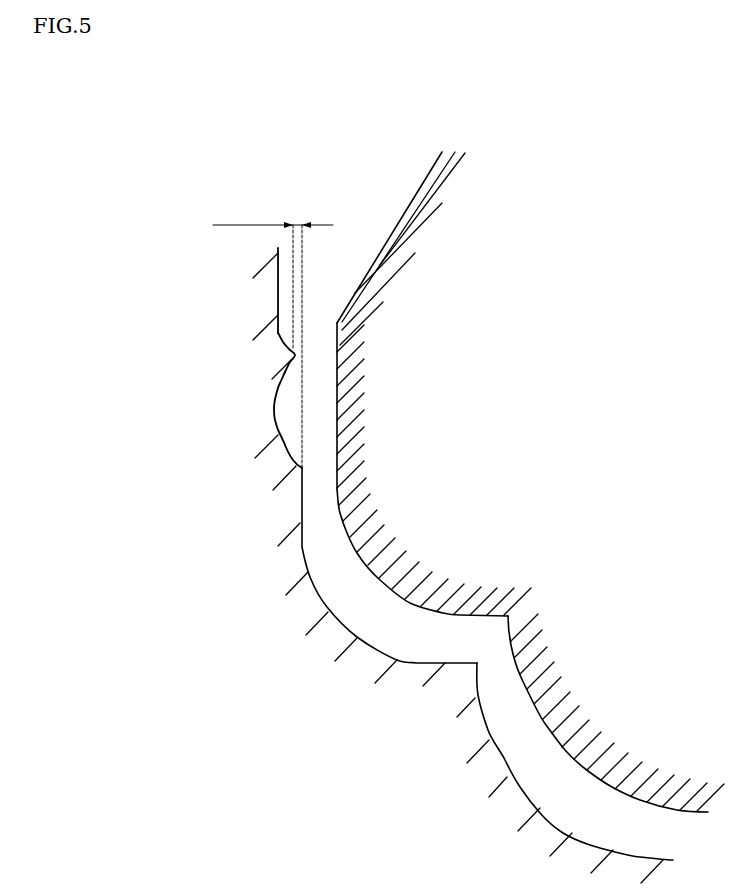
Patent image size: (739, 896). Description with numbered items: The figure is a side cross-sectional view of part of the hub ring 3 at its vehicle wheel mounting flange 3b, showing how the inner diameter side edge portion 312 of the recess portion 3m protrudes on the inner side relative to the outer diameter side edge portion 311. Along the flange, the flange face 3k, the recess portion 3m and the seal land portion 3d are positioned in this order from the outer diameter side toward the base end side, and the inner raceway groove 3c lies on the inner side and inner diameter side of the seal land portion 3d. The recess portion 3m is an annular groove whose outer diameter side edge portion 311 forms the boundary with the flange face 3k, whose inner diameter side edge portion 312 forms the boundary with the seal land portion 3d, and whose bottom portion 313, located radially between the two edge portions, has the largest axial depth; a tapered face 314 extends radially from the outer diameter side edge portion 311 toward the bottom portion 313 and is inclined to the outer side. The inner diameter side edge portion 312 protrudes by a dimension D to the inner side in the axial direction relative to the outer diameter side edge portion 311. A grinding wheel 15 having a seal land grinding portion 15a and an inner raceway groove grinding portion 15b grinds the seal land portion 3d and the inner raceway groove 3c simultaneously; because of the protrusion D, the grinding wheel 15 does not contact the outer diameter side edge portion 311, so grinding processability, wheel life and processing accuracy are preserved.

The hub ring 3 is at (363, 723).
The vehicle wheel mounting flange 3b is at (252, 288).
The inner raceway groove 3c is at (575, 837).
The seal land portion 3d is at (355, 635).
The flange face 3k is at (282, 277).
The recess portion 3m is at (307, 379).
The grinding wheel 15 is at (399, 220).
The seal land grinding portion 15a is at (368, 563).
The inner raceway groove grinding portion 15b is at (555, 744).
The outer diameter side edge portion 311 is at (292, 353).
The inner diameter side edge portion 312 is at (310, 449).
The bottom portion 313 is at (276, 414).
The tapered face 314 is at (288, 379).
The dimension D is at (273, 275).